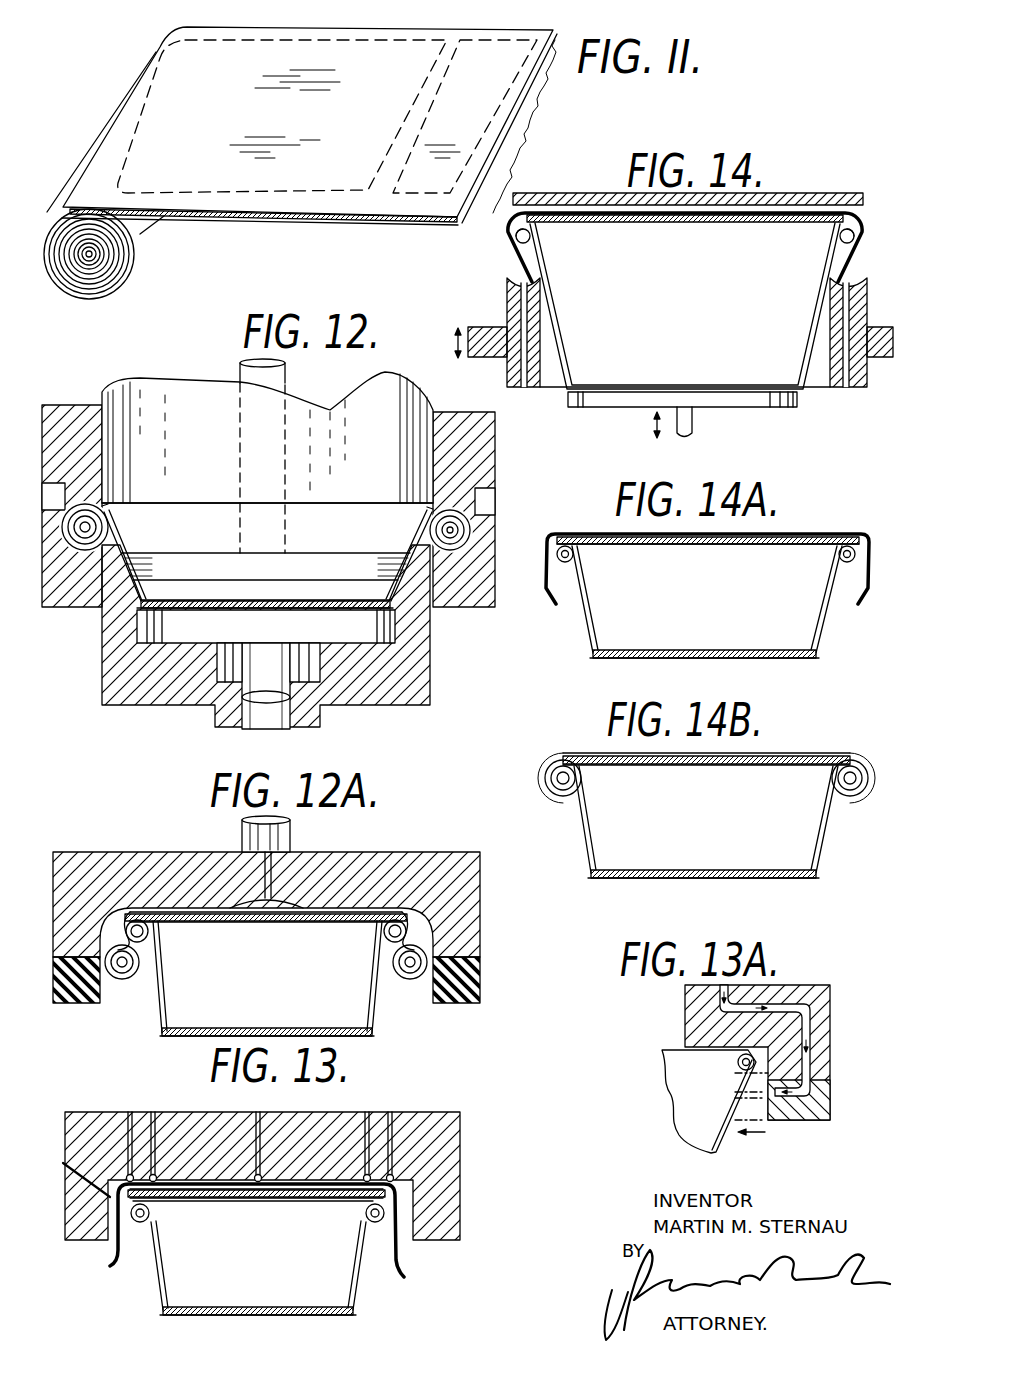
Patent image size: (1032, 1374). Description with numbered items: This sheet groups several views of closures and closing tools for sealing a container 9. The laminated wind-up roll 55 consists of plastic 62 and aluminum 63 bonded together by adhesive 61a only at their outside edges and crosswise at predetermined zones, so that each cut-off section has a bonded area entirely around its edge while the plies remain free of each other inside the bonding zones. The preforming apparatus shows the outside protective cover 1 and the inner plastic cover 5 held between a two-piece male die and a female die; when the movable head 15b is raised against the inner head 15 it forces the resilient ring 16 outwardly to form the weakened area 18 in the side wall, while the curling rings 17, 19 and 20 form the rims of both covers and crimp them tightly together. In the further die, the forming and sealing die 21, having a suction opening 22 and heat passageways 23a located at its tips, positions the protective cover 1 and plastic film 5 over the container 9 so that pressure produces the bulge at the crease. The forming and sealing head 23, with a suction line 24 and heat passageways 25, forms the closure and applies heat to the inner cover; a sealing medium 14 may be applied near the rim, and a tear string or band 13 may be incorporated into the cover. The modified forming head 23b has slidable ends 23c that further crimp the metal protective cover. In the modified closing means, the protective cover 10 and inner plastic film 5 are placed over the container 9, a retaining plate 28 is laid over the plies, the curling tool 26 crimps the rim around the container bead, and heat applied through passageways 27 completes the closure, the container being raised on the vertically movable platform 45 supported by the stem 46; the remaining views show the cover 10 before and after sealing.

In FIG. 12, the outside protective cover 1 is at (325, 604).
In FIG. 12A, the outside protective cover 1 is at (243, 923).
In FIG. 13, the outside protective cover 1 is at (438, 1239).
In FIG. 14, the inner plastic cover 5 is at (668, 221).
In FIG. 12, the inner plastic cover 5 is at (286, 598).
In FIG. 12A, the inner plastic cover 5 is at (300, 923).
In FIG. 13, the inner plastic cover 5 is at (386, 1246).
In FIG. 14A, the inner plastic cover 5 is at (748, 547).
In FIG. 14B, the inner plastic cover 5 is at (722, 767).
In FIG. 12A, the container 9 is at (152, 1013).
In FIG. 13, the container 9 is at (201, 1266).
In FIG. 13A, the container 9 is at (705, 1088).
In FIG. 14A, the container 9 is at (582, 622).
In FIG. 14B, the container 9 is at (824, 828).
In FIG. 14, the protective cover 10 is at (507, 255).
In FIG. 14A, the protective cover 10 is at (795, 534).
In FIG. 14B, the protective cover 10 is at (800, 754).
In FIG. 13, the tear string or band 13 is at (273, 1203).
In FIG. 13, the sealing medium 14 is at (156, 1202).
In FIG. 12, the inner head 15 is at (190, 386).
In FIG. 12, the movable head 15b is at (172, 582).
In FIG. 12, the resilient ring 16 is at (212, 565).
In FIG. 12, the curling ring 17 is at (420, 645).
In FIG. 12, the weakened area 18 is at (412, 556).
In FIG. 12, the curling ring 19 is at (493, 452).
In FIG. 12, the curling ring 20 is at (490, 495).
In FIG. 12A, the forming and sealing die 21 is at (405, 869).
In FIG. 12A, the suction opening 22 is at (289, 837).
In FIG. 13, the forming and sealing head 23 is at (180, 1112).
In FIG. 12A, the heat passageway 23a is at (477, 993).
In FIG. 13A, the heat passageway 23a is at (798, 1122).
In FIG. 13A, the modified forming head 23b is at (808, 989).
In FIG. 13A, the slidable ends 23c is at (829, 1090).
In FIG. 13, the suction line 24 is at (390, 1112).
In FIG. 13, the heat passageway 25 is at (63, 1162).
In FIG. 14, the curling tool 26 is at (490, 326).
In FIG. 14, the heat passageway 27 is at (521, 388).
In FIG. 14, the retaining plate 28 is at (822, 205).
In FIG. 14, the vertically movable platform 45 is at (776, 407).
In FIG. 14, the stem 46 is at (693, 424).
In FIG. 11, the laminated wind-up roll 55 is at (143, 261).
In FIG. 13, the laminated wind-up roll 55 is at (155, 1177).
In FIG. 11, the adhesive 61a is at (448, 99).
In FIG. 11, the plastic 62 is at (152, 222).
In FIG. 11, the aluminum 63 is at (507, 85).